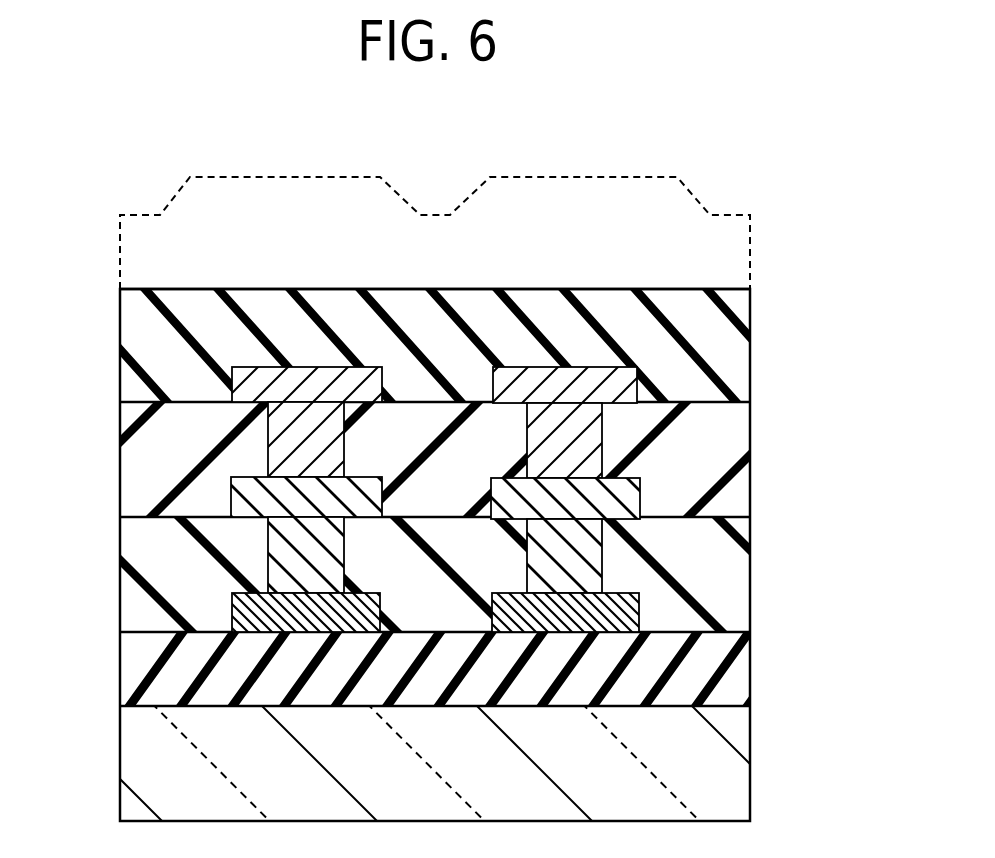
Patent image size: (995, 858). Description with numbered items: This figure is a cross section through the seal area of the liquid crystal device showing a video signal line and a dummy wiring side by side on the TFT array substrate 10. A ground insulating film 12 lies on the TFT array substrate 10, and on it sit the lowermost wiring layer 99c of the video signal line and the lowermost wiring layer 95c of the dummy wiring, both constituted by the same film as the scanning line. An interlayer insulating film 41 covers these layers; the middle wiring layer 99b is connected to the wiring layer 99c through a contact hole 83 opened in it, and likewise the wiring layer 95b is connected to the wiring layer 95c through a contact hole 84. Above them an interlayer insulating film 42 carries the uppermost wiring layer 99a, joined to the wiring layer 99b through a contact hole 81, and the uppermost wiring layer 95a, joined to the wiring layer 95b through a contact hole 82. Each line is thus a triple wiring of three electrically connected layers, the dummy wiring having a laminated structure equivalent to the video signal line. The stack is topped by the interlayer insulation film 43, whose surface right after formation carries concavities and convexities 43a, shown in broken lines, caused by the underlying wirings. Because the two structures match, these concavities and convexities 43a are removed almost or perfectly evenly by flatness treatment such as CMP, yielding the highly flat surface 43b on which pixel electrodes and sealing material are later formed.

The TFT array substrate 10 is at (737, 781).
The ground insulating film 12 is at (737, 681).
The interlayer insulating film 41 is at (737, 560).
The interlayer insulating film 42 is at (737, 446).
The interlayer insulation film 43 is at (737, 350).
The concavities and convexities 43a is at (582, 176).
The surface 43b is at (617, 288).
The contact hole 81 is at (342, 448).
The contact hole 82 is at (597, 428).
The contact hole 83 is at (277, 576).
The contact hole 84 is at (534, 564).
The wiring layer 99a is at (255, 378).
The wiring layer 99b is at (248, 493).
The wiring layer 99c is at (248, 609).
The wiring layer 95a is at (527, 380).
The wiring layer 95b is at (617, 495).
The wiring layer 95c is at (627, 610).